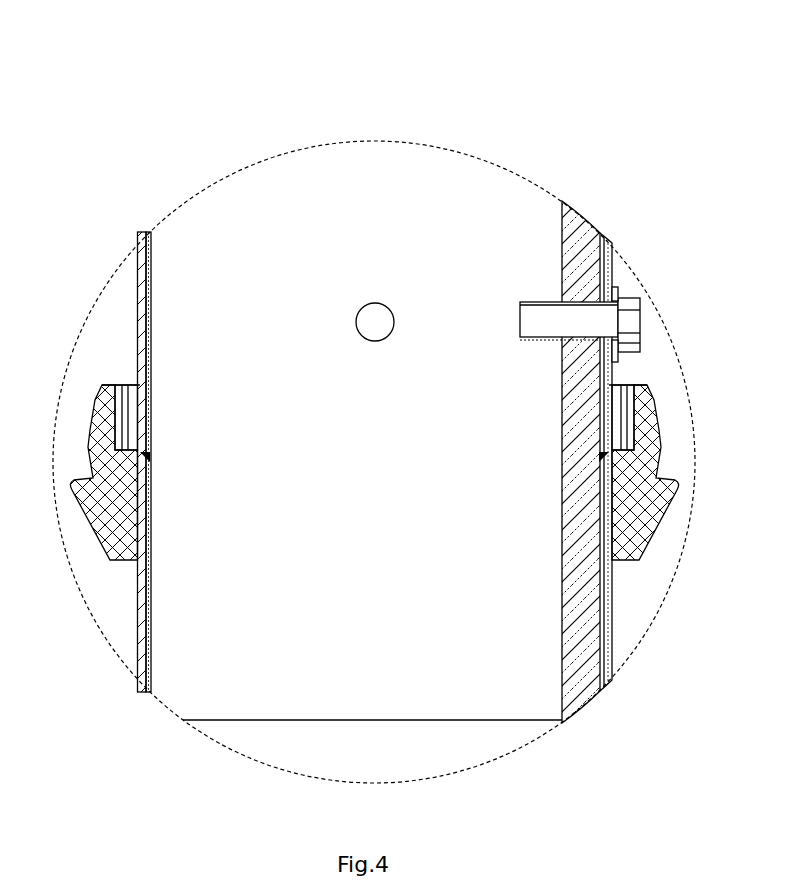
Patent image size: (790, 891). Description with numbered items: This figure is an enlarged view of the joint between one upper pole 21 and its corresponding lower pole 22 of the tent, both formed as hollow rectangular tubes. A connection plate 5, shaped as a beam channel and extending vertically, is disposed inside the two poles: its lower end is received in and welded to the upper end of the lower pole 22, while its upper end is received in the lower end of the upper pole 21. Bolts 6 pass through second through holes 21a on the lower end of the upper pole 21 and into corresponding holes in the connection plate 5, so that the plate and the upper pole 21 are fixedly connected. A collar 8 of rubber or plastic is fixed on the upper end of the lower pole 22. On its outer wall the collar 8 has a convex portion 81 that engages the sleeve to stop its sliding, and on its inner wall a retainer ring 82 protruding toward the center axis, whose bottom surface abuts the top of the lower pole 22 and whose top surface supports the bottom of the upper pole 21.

The connection plate 5 is at (578, 258).
The upper pole 21 is at (148, 262).
The second through holes 21a is at (613, 257).
The lower pole 22 is at (140, 586).
The bolts 6 is at (640, 298).
The collar 8 is at (381, 517).
The convex portion 81 is at (90, 428).
The retainer ring 82 is at (665, 432).